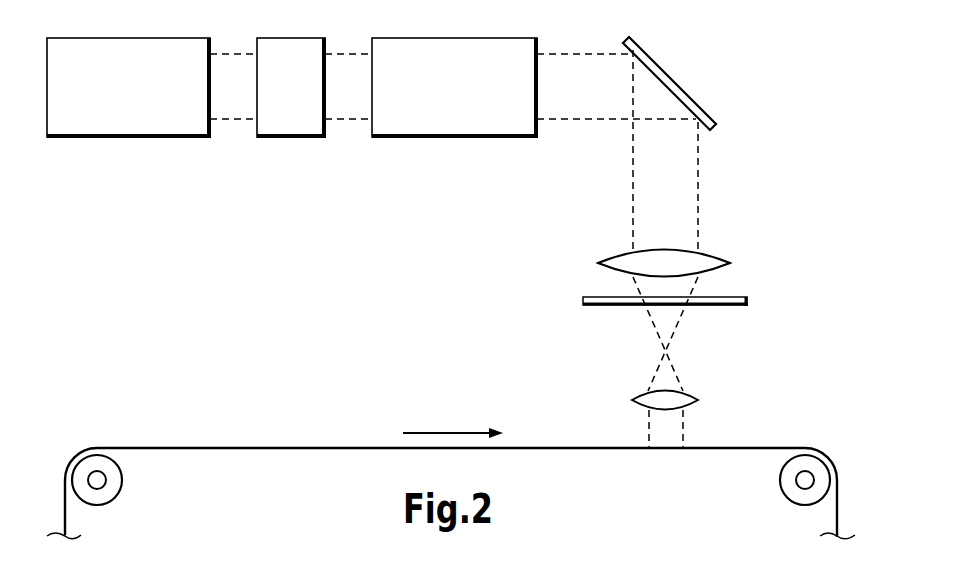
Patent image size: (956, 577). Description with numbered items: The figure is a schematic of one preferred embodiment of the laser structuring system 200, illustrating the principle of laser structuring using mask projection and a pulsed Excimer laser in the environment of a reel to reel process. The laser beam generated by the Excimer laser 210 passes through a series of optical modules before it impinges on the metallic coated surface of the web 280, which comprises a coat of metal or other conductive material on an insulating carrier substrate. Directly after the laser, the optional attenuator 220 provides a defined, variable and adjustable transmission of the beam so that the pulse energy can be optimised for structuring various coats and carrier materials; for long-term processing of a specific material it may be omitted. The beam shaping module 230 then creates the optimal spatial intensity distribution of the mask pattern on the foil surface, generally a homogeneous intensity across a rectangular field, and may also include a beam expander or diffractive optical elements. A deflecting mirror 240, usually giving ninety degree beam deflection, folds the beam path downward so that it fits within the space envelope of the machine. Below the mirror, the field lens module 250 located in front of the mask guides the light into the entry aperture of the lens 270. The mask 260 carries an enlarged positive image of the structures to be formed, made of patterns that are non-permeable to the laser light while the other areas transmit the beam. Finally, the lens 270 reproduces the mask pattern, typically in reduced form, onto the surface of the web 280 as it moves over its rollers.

The optical inspection system 200 is at (743, 63).
The Excimer laser 210 is at (147, 95).
The attenuator 220 is at (310, 95).
The beam shaping module 230 is at (474, 95).
The deflecting mirror 240 is at (678, 86).
The field lens module 250 is at (730, 263).
The mask 260 is at (747, 300).
The lens 270 is at (698, 400).
The web 280 is at (234, 447).